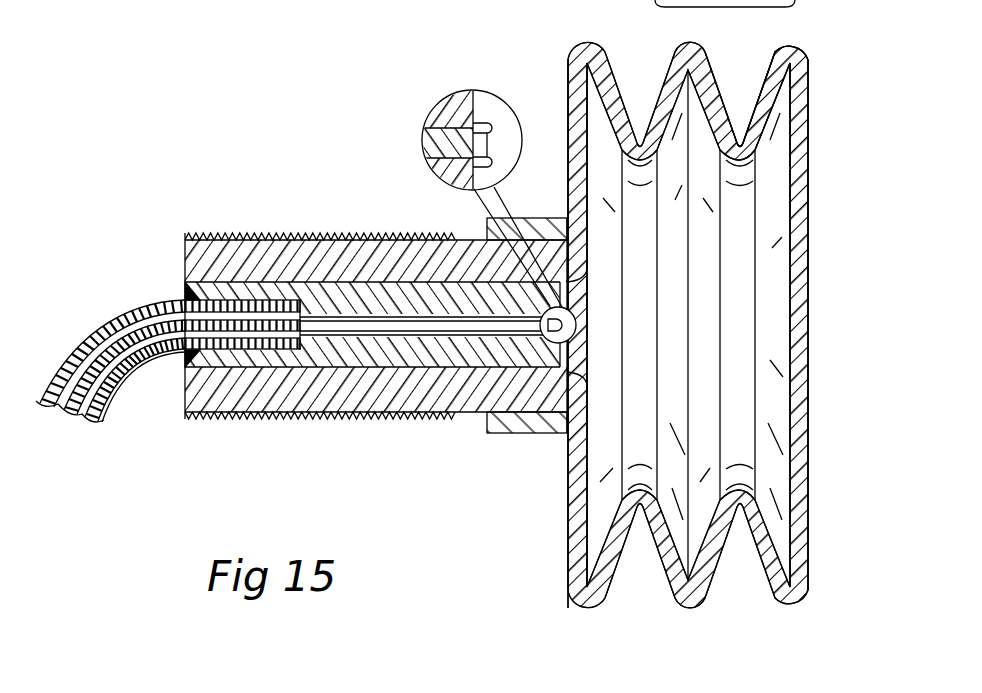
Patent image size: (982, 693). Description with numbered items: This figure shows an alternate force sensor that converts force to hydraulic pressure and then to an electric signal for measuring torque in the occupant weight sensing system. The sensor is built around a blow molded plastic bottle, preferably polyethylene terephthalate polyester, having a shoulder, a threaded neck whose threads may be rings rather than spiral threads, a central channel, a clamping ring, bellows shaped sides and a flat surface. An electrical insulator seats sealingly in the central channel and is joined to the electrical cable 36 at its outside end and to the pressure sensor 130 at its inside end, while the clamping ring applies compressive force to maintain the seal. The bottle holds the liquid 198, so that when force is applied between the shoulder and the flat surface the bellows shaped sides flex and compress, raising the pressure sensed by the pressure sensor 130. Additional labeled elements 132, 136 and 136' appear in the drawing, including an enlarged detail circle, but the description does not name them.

The electrical cable 36 is at (120, 382).
The pressure sensor 130 is at (497, 130).
The ferrule 132 is at (205, 292).
The conductors 136 is at (242, 328).
The conductor ends 136' is at (485, 185).
The liquid 198 is at (747, 327).